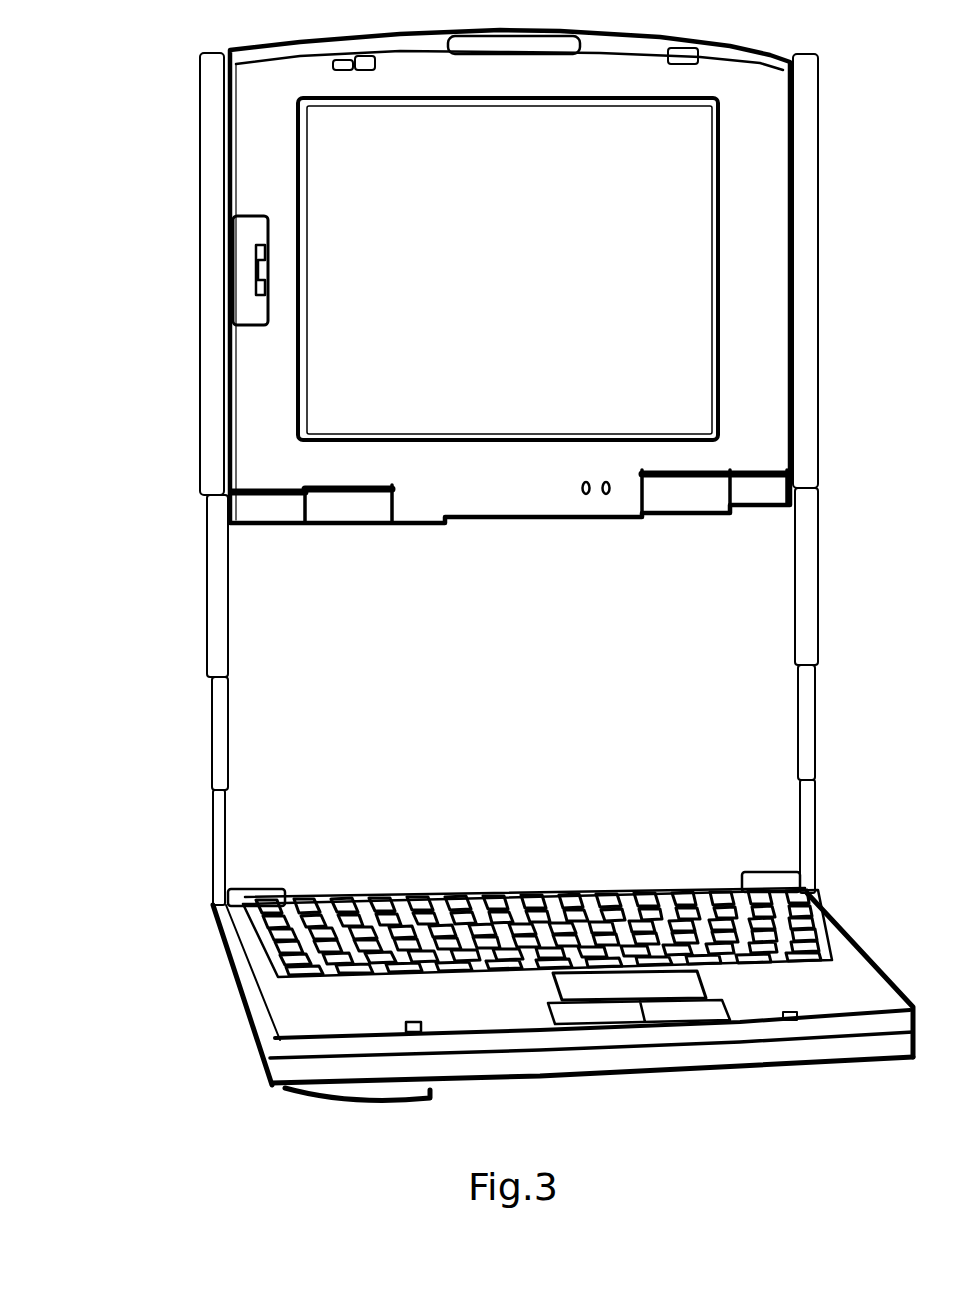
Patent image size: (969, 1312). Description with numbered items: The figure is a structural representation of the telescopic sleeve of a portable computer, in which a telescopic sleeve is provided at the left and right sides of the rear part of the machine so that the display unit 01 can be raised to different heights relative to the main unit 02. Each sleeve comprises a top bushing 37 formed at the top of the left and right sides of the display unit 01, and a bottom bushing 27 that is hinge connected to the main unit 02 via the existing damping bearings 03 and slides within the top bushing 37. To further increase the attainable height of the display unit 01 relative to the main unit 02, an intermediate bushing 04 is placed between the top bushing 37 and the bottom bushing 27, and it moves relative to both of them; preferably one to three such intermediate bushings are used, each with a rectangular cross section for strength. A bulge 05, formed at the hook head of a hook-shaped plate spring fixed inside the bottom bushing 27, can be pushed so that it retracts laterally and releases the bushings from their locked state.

The display unit 01 is at (405, 400).
The main unit 02 is at (395, 907).
The damping bearings 03 is at (763, 870).
The intermediate bushing 04 is at (228, 715).
The bulge 05 is at (208, 775).
The bottom bushing 27 is at (232, 845).
The top bushing 37 is at (230, 307).